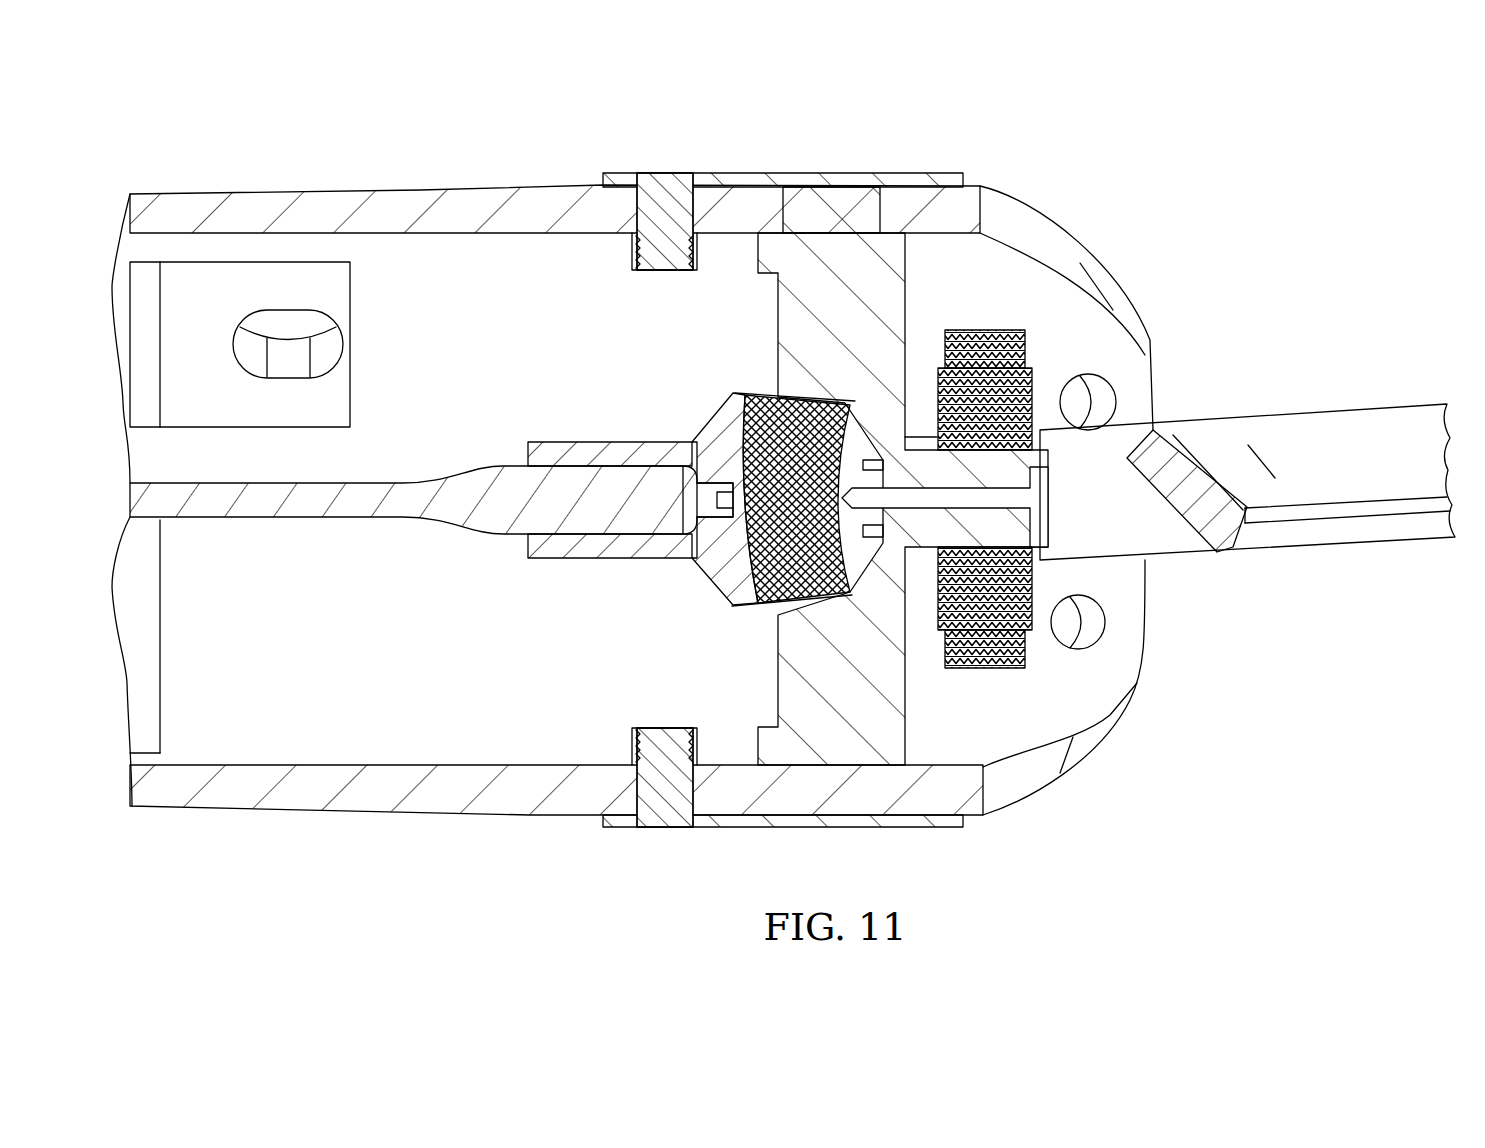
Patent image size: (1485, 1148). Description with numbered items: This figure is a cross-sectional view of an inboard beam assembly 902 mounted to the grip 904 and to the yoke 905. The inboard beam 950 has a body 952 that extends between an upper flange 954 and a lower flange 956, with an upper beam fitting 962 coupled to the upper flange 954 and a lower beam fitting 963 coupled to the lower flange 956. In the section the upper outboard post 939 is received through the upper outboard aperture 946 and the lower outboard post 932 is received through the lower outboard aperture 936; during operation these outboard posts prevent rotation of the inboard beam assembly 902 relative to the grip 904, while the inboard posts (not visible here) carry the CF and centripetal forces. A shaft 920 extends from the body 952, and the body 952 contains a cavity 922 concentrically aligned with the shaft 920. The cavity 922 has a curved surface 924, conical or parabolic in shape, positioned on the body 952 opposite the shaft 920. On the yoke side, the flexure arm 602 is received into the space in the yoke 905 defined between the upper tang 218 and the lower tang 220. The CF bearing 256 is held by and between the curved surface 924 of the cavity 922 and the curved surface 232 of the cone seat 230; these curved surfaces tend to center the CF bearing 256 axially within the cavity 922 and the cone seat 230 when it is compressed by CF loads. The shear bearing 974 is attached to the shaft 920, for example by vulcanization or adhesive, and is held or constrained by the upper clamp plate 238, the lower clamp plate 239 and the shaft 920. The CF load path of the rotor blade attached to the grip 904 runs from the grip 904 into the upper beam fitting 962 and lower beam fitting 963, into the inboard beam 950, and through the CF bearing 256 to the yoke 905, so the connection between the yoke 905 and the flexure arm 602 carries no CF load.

The inboard beam assembly 902 is at (940, 122).
The grip 904 is at (1018, 228).
The yoke 905 is at (1305, 428).
The shaft 920 is at (1040, 480).
The cavity 922 is at (820, 392).
The curved surface 924 is at (855, 575).
The lower outboard post 932 is at (673, 737).
The lower outboard aperture 936 is at (664, 795).
The upper outboard post 939 is at (660, 262).
The upper outboard aperture 946 is at (660, 223).
The inboard beam 950 is at (883, 342).
The body 952 is at (883, 631).
The upper flange 954 is at (748, 260).
The lower flange 956 is at (752, 745).
The upper beam fitting 962 is at (792, 172).
The lower beam fitting 963 is at (888, 827).
The shear bearing 974 is at (1032, 385).
The upper clamp plate 238 is at (1030, 338).
The lower clamp plate 239 is at (1030, 665).
The upper tang 218 is at (585, 450).
The lower tang 220 is at (560, 555).
The cone seat 230 is at (695, 518).
The curved surface 232 is at (740, 428).
The CF bearing 256 is at (765, 612).
The flexure arm 602 is at (243, 507).